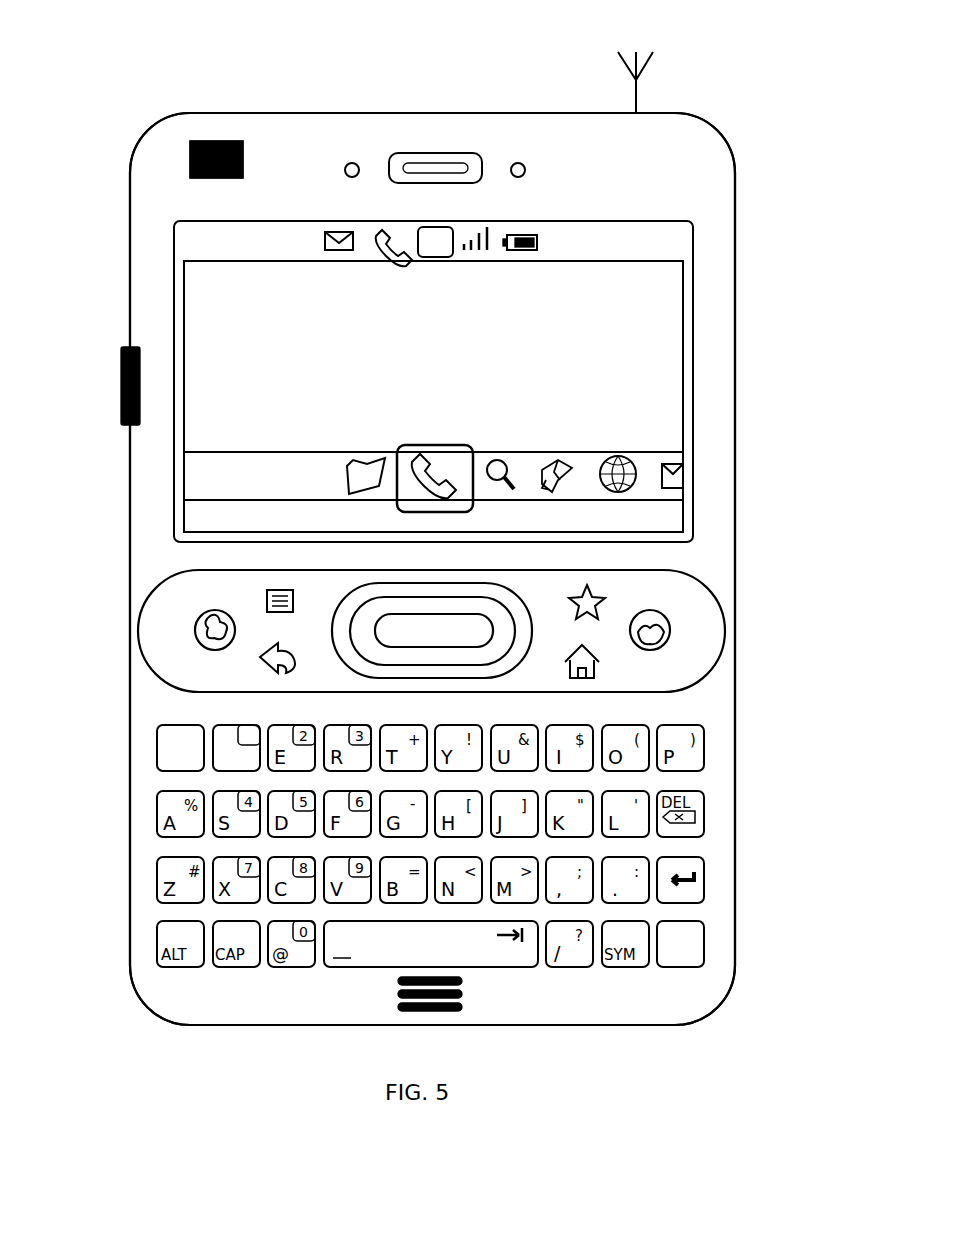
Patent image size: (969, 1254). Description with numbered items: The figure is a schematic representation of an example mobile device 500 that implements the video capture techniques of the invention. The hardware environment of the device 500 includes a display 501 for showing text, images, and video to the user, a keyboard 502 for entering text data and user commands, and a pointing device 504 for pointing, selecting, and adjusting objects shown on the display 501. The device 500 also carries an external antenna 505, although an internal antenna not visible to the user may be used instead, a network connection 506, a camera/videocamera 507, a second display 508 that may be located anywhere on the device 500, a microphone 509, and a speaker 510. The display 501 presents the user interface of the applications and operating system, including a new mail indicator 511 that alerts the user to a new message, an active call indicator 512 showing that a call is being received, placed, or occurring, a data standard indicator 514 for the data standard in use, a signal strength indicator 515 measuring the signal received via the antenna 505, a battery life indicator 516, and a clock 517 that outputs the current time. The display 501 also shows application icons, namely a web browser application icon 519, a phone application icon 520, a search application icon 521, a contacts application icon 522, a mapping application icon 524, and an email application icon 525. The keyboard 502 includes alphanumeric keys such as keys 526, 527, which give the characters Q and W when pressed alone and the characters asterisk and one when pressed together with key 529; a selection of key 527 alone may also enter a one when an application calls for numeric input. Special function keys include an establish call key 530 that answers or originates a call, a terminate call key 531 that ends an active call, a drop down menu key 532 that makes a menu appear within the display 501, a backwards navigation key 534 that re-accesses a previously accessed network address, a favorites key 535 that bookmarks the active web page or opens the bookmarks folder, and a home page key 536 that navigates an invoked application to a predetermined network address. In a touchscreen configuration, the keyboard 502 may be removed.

The device 500 is at (74, 36).
The display 501 is at (224, 308).
The keyboard 502 is at (668, 994).
The pointing device 504 is at (446, 626).
The antenna 505 is at (636, 100).
The network connection 506 is at (121, 383).
The camera/videocamera 507 is at (243, 158).
The display 508 is at (190, 160).
The microphone 509 is at (454, 1009).
The speaker 510 is at (433, 153).
The new mail indicator 511 is at (314, 232).
The active call indicator 512 is at (381, 232).
The data standard indicator 514 is at (421, 227).
The signal strength indicator 515 is at (479, 230).
The battery life indicator 516 is at (514, 233).
The clock 517 is at (602, 239).
The web browser application icon 519 is at (349, 464).
The phone application icon 520 is at (435, 446).
The search application icon 521 is at (498, 455).
The contacts application icon 522 is at (564, 463).
The mapping application icon 524 is at (622, 455).
The email application icon 525 is at (674, 463).
The key 526 is at (168, 744).
The key 527 is at (255, 736).
The key 529 is at (704, 955).
The establish call key 530 is at (206, 622).
The terminate call key 531 is at (659, 620).
The drop down menu key 532 is at (280, 590).
The backwards navigation key 534 is at (260, 657).
The favorites key 535 is at (588, 588).
The home page key 536 is at (599, 657).